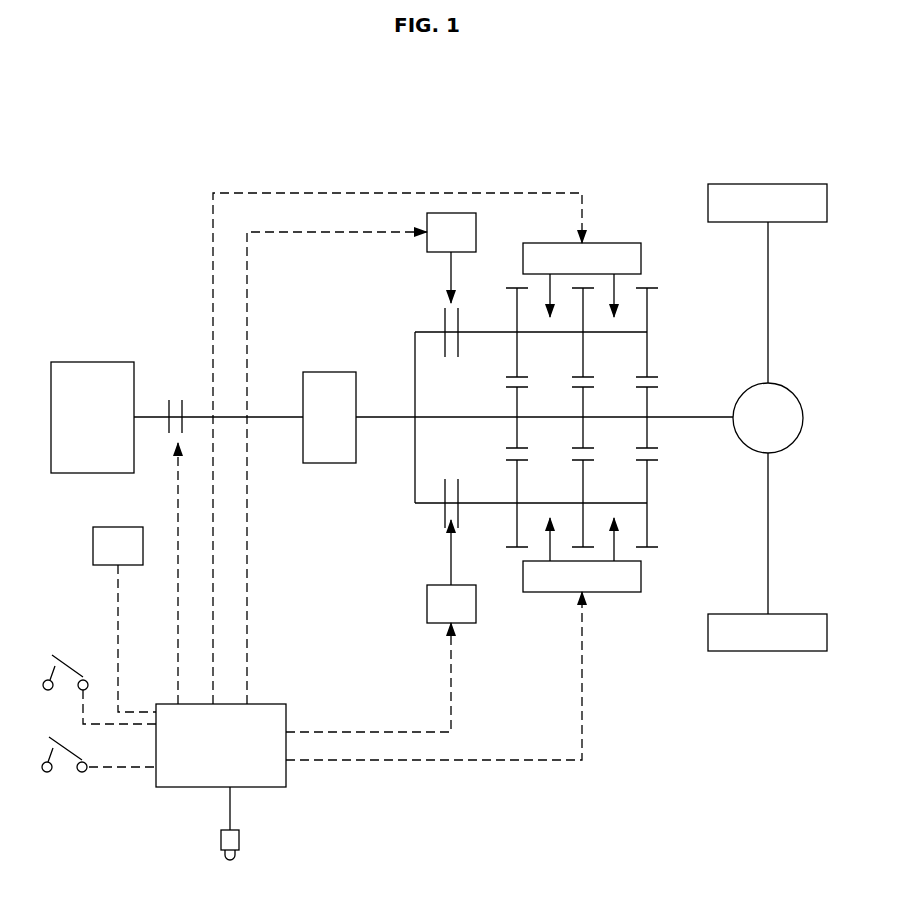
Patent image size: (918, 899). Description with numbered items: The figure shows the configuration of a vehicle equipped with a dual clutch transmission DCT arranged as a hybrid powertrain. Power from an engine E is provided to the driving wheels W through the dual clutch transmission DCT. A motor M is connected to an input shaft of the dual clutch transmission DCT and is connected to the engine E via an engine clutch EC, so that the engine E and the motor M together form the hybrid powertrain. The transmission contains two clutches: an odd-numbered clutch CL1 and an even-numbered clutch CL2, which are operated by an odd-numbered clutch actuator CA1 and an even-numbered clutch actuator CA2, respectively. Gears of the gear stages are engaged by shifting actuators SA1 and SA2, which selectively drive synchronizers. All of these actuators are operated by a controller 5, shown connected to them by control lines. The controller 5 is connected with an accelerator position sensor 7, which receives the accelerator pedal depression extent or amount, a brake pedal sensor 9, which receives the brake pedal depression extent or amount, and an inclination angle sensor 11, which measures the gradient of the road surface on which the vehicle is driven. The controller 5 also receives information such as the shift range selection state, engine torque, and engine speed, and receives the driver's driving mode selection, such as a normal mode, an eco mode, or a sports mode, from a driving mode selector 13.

The engine E is at (87, 365).
The engine clutch EC is at (168, 405).
The motor M is at (327, 372).
The odd-numbered clutch CL1 is at (444, 320).
The even-numbered clutch CL2 is at (444, 518).
The odd-numbered clutch actuator CA1 is at (453, 213).
The even-numbered clutch actuator CA2 is at (476, 618).
The shifting actuator SA1 is at (622, 243).
The shifting actuator SA2 is at (627, 592).
The dual clutch transmission DCT is at (450, 142).
The driving wheel W is at (768, 193).
The controller 5 is at (271, 787).
The accelerator position sensor 7 is at (82, 673).
The brake pedal sensor 9 is at (83, 773).
The inclination angle sensor 11 is at (222, 843).
The driving mode selector 13 is at (98, 547).